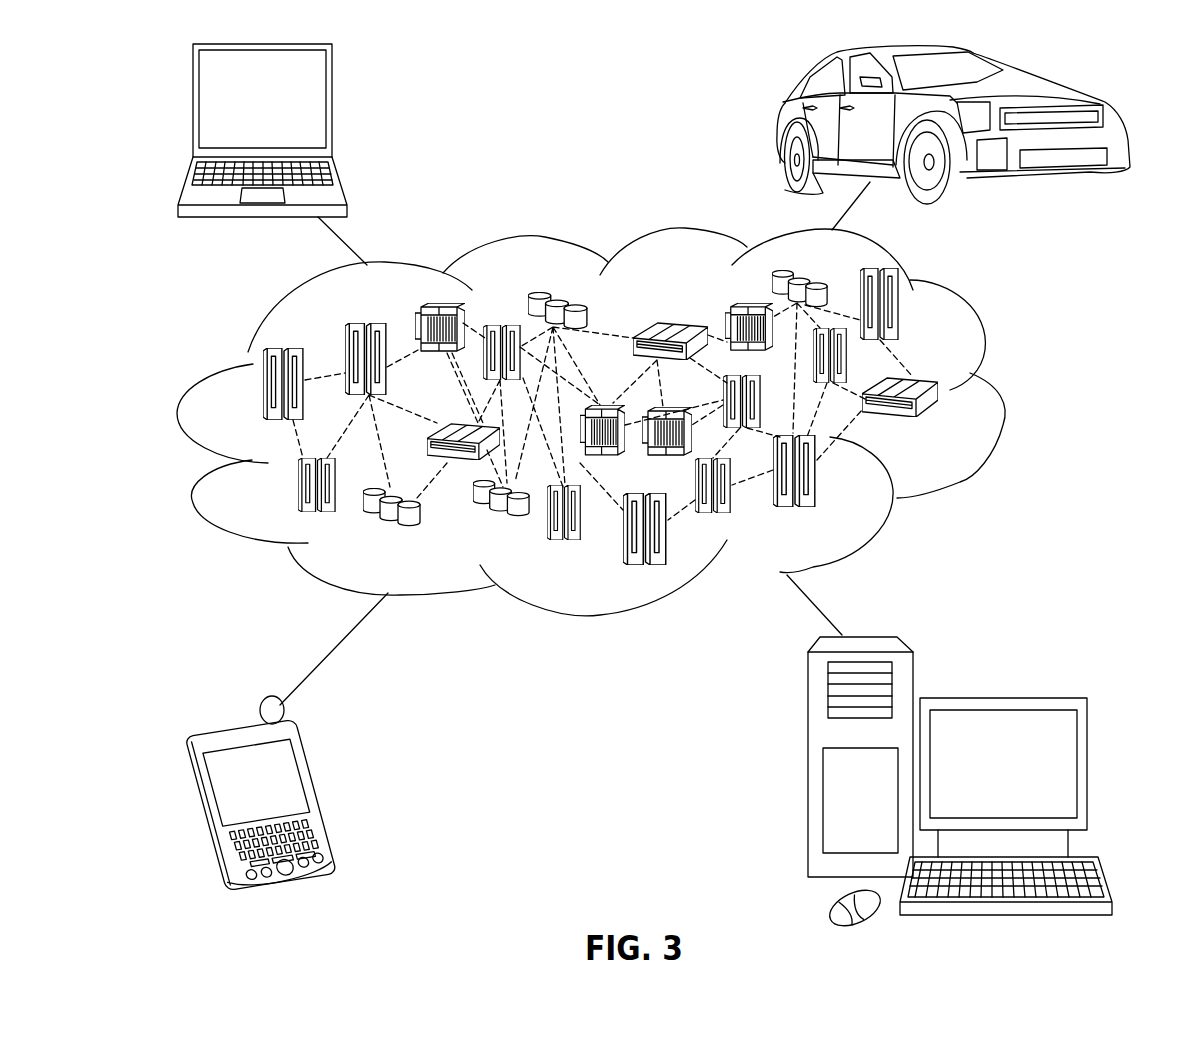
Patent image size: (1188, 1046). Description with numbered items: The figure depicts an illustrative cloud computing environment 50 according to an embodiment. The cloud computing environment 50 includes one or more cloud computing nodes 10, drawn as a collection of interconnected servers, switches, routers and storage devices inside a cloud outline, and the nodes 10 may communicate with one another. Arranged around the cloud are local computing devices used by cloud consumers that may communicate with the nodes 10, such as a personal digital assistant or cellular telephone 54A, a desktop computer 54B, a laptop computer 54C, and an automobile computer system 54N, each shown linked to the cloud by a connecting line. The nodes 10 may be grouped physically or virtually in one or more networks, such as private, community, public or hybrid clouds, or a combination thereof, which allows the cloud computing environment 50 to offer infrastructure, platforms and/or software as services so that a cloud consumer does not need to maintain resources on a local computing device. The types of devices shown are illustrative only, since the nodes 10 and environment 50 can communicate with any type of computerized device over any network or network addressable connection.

The cloud computing nodes 10 is at (943, 427).
The cloud computing environment 50 is at (1000, 393).
The personal digital assistant (PDA) or cellular telephone 54A is at (322, 793).
The desktop computer 54B is at (1000, 697).
The laptop computer 54C is at (332, 108).
The automobile computer system 54N is at (780, 122).